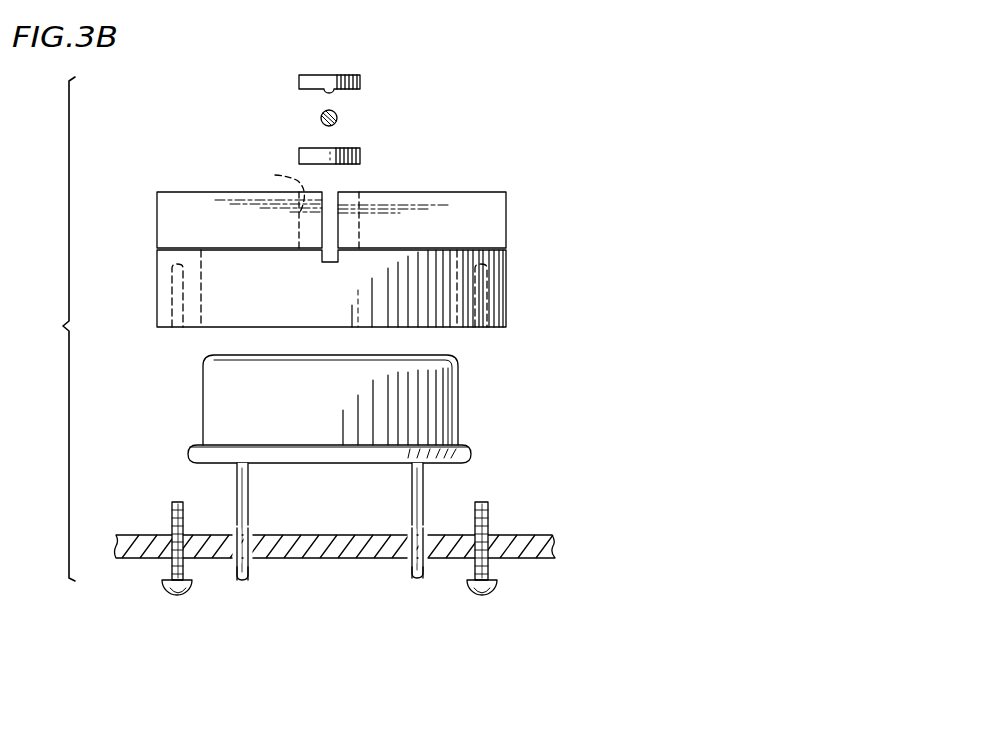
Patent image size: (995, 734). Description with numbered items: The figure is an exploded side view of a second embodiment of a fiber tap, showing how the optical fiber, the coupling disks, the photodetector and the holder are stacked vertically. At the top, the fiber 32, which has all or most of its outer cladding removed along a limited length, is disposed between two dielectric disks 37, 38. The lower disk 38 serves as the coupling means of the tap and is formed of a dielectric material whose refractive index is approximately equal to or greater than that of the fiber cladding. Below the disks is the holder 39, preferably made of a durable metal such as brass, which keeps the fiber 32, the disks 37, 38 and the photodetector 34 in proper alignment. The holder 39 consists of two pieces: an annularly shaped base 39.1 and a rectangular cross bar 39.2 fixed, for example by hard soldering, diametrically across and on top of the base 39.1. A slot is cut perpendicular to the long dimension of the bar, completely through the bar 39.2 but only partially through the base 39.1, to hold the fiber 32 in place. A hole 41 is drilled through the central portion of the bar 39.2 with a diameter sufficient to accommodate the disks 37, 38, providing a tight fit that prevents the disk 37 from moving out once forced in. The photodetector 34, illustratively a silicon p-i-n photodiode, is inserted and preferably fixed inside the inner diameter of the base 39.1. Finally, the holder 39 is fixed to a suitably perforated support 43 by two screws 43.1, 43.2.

The dielectric disk 37 is at (361, 82).
The fiber 32 is at (319, 118).
The dielectric disk 38 is at (361, 156).
The hole 41 is at (278, 205).
The holder 39 is at (389, 259).
The rectangular cross bar 39.2 is at (502, 213).
The annularly shaped base 39.1 is at (446, 322).
The photodetector 34 is at (458, 412).
The support 43 is at (531, 534).
The screw 43.1 is at (171, 596).
The screw 43.2 is at (490, 596).